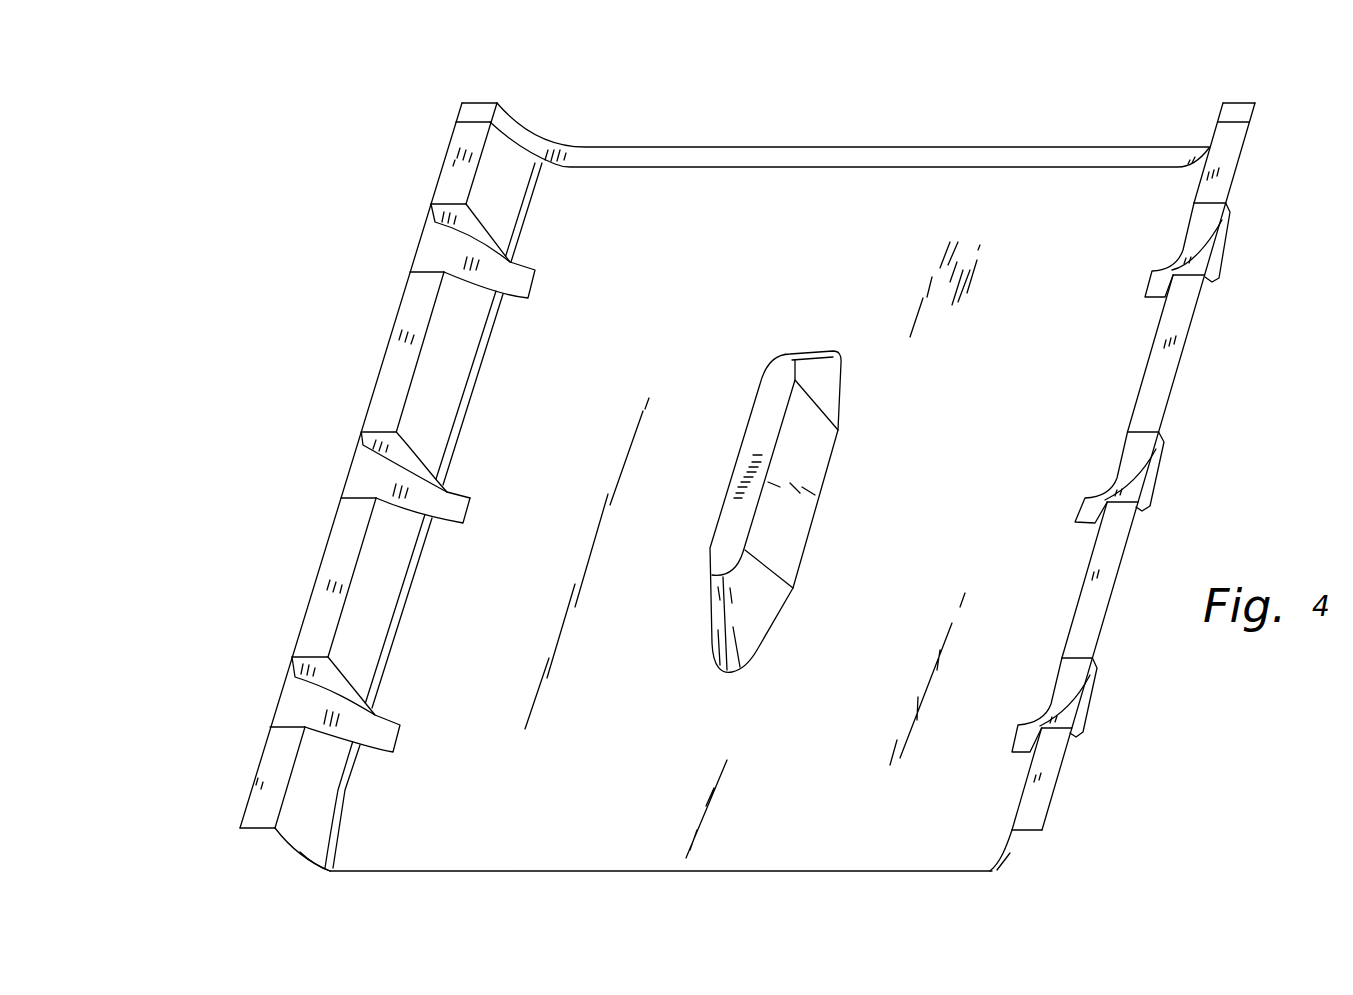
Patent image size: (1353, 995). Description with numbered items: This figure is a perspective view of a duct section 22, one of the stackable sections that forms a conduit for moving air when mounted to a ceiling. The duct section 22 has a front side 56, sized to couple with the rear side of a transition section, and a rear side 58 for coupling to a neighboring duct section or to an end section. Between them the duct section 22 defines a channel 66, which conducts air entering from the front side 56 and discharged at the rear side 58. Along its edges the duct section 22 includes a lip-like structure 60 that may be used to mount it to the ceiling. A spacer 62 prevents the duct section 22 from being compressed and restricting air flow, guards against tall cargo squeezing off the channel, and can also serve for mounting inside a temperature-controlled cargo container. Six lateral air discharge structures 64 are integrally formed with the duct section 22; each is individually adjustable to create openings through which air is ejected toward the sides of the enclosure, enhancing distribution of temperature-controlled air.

The duct section 22 is at (1182, 93).
The front side 56 is at (988, 866).
The rear side 58 is at (517, 122).
The lip-like structure 60 is at (243, 812).
The spacer 62 is at (815, 348).
The lateral air discharge structure 64 is at (420, 243).
The channel 66 is at (418, 836).